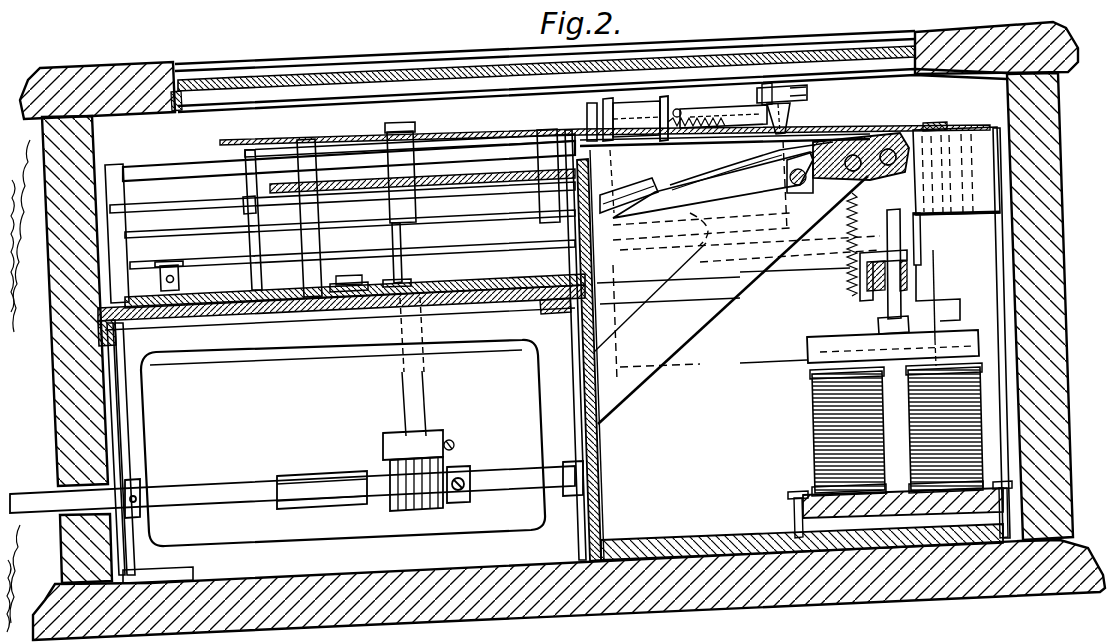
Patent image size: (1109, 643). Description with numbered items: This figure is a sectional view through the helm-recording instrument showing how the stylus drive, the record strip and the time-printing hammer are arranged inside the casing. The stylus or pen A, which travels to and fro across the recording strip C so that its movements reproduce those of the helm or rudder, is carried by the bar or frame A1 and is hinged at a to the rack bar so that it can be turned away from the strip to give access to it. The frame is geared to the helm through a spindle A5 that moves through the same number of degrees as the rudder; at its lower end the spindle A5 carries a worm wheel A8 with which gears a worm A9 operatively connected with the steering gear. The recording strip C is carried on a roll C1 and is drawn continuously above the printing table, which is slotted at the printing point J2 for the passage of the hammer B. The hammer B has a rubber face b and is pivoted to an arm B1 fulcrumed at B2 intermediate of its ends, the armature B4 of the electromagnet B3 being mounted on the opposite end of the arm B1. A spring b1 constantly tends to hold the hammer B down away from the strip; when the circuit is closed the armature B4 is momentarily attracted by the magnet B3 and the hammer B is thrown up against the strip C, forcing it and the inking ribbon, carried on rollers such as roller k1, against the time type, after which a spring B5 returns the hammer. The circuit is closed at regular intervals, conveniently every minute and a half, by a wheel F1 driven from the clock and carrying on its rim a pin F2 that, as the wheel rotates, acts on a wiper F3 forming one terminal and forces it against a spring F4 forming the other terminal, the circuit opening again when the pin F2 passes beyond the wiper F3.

The inking ribbon roller k1 is at (638, 104).
The printing point J2 is at (666, 110).
The hinge a is at (717, 105).
The bar or frame A1 is at (808, 99).
The stylus or pen A is at (788, 131).
The recording strip C is at (828, 135).
The arm B1 is at (868, 152).
The rubber face b is at (629, 185).
The hammer B is at (645, 186).
The spring b1 is at (715, 178).
The fulcrum B2 is at (840, 232).
The return spring B5 is at (850, 278).
The roll C1 is at (938, 276).
The armature B4 is at (812, 349).
The electromagnet B3 is at (815, 429).
The spring F4 is at (290, 318).
The wiper F3 is at (326, 312).
The pin F2 is at (350, 300).
The wheel F1 is at (380, 305).
The spindle A5 is at (412, 378).
The worm wheel A8 is at (392, 470).
The worm A9 is at (398, 512).